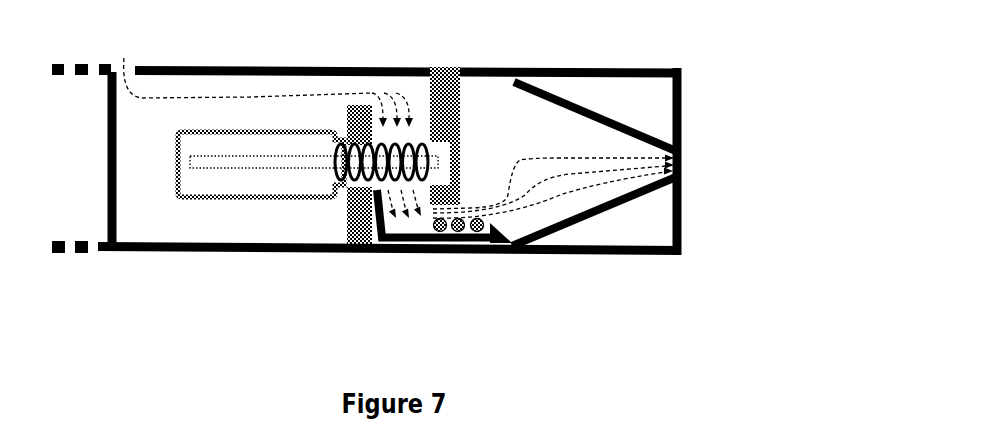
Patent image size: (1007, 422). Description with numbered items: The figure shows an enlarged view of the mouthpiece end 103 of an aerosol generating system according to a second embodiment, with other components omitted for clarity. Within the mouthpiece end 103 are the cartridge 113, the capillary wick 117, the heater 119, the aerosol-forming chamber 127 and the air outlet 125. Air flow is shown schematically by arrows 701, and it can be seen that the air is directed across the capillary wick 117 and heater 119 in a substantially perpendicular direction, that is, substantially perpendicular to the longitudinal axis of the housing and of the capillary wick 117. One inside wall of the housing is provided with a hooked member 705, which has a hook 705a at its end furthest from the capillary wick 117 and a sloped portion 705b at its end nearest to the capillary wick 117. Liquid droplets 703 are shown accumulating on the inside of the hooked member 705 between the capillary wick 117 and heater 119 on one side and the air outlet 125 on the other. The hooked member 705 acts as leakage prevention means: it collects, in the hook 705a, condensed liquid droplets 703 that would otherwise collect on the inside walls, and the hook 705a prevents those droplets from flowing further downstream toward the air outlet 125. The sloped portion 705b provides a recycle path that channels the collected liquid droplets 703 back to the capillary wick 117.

The mouthpiece end 103 is at (174, 51).
The arrows 701 is at (242, 95).
The cartridge 113 is at (270, 195).
The capillary wick 117 is at (275, 155).
The heater 119 is at (360, 177).
The hooked member 705 is at (420, 270).
The hook 705a is at (508, 254).
The sloped portion 705b is at (360, 252).
The liquid droplets 703 is at (460, 241).
The aerosol-forming chamber 127 is at (503, 120).
The air outlet 125 is at (715, 177).